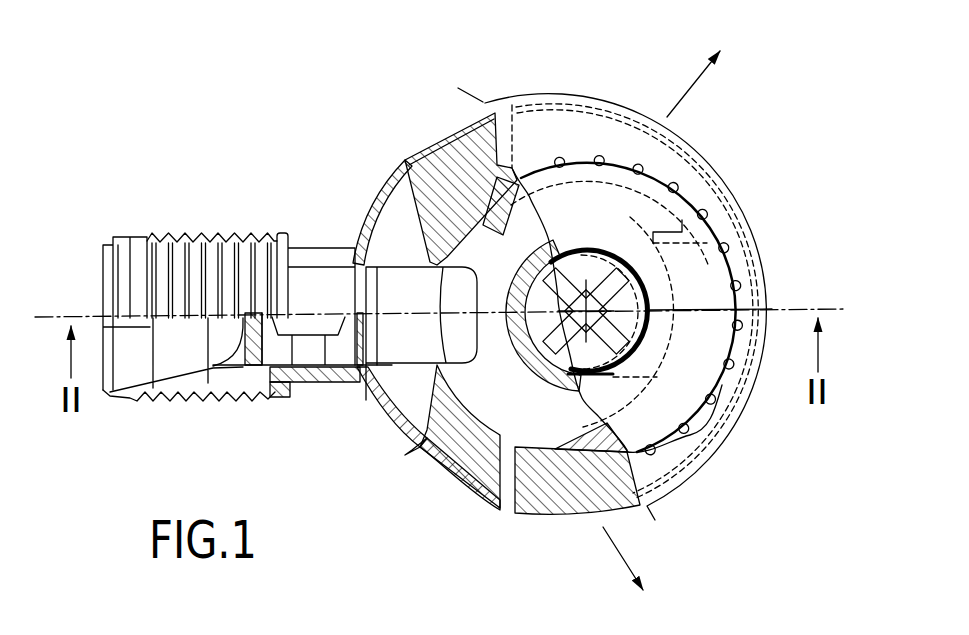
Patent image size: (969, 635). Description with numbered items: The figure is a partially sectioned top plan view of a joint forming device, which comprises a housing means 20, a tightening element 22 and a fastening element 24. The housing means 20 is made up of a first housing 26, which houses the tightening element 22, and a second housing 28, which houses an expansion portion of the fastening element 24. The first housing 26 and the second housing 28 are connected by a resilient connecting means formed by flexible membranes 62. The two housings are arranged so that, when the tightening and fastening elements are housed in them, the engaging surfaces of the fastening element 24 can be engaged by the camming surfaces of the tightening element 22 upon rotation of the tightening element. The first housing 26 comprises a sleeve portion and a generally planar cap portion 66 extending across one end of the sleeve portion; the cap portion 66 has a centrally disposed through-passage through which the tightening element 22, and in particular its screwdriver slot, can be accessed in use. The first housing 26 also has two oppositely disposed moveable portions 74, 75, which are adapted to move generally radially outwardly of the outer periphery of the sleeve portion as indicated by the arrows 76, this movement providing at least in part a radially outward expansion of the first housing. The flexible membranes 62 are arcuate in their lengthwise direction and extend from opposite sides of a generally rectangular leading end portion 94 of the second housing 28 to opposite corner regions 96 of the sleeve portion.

The housing means 20 is at (316, 174).
The tightening element 22 is at (656, 411).
The fastening element 24 is at (192, 354).
The first housing 26 is at (724, 152).
The second housing 28 is at (123, 229).
The flexible membranes 62 is at (373, 420).
The cap portion 66 is at (752, 242).
The moveable portion 74 is at (560, 516).
The moveable portion 75 is at (578, 132).
The arrows 76 is at (693, 84).
The leading end portion 94 is at (320, 258).
The corner regions 96 is at (417, 473).